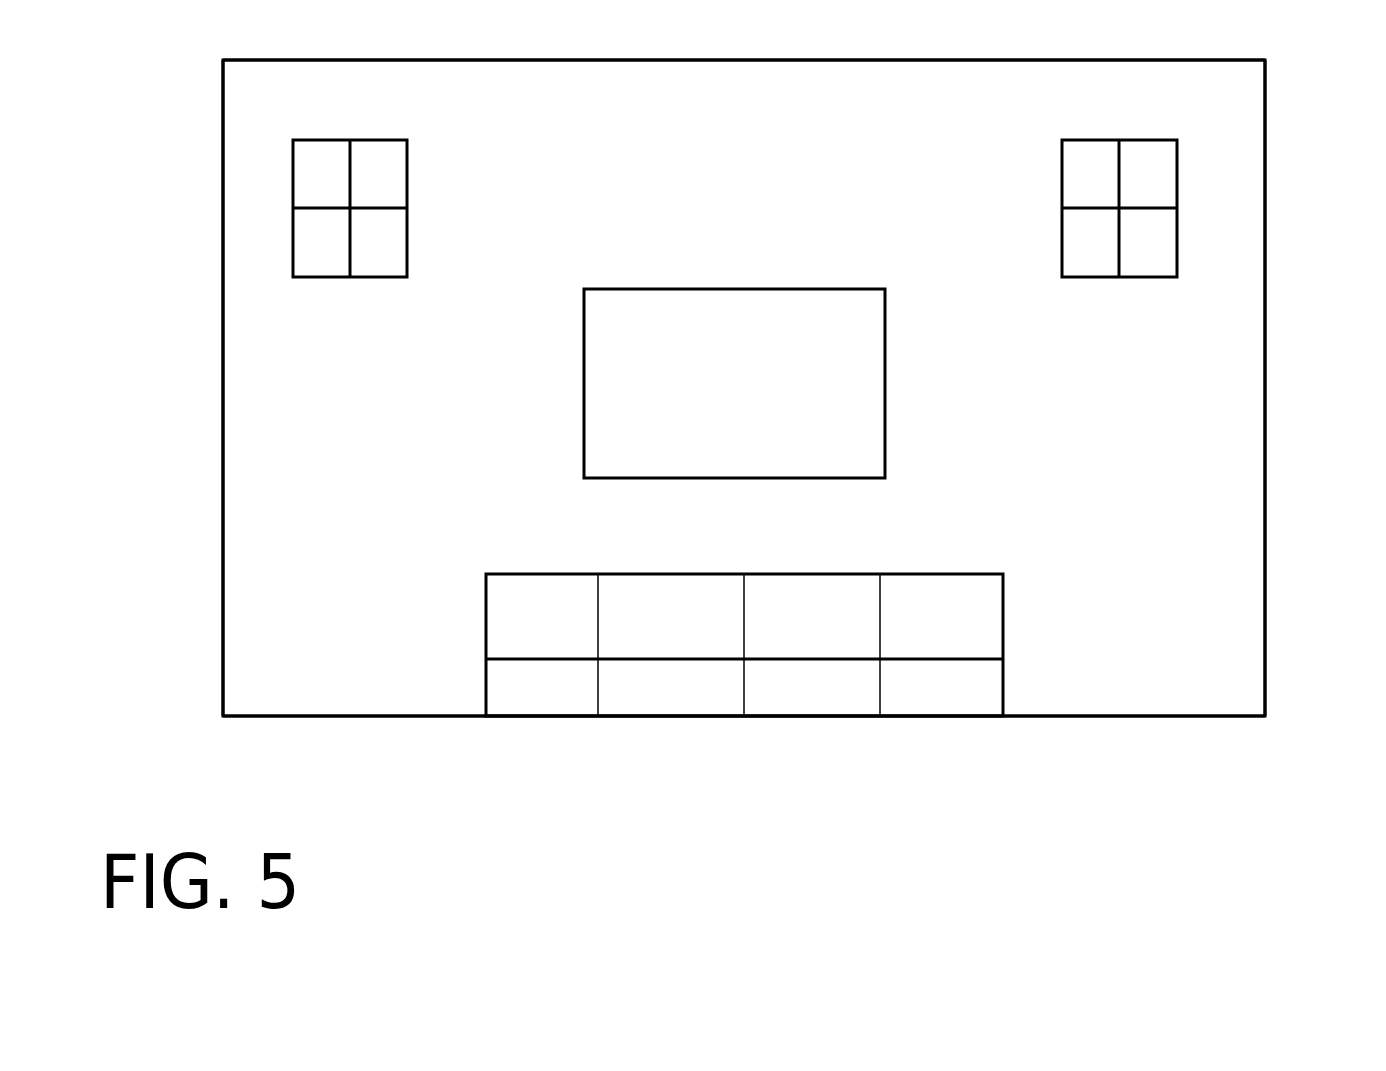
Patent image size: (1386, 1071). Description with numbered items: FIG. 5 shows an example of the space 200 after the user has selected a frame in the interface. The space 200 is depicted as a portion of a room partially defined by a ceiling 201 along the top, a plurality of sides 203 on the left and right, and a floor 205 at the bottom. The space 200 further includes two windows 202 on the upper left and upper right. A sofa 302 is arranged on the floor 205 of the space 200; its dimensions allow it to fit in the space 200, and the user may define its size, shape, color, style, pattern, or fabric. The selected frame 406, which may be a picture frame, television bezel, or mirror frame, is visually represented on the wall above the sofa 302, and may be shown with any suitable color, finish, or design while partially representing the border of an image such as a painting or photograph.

The space 200 is at (613, 60).
The ceiling 201 is at (878, 56).
The windows 202 is at (350, 140).
The sides 203 is at (219, 401).
The floor 205 is at (503, 728).
The sofa 302 is at (950, 576).
The frame 406 is at (827, 289).